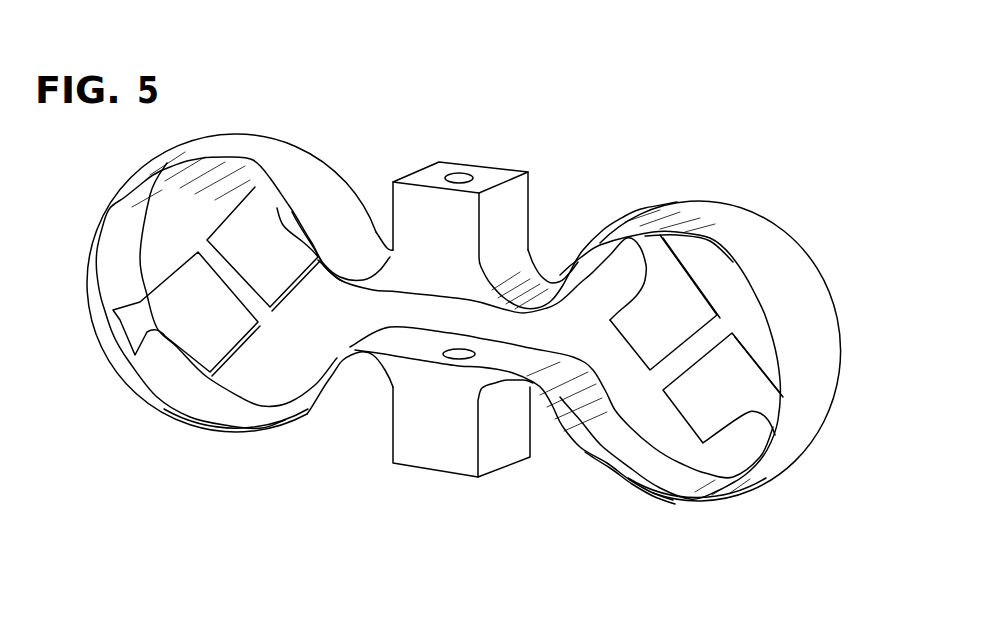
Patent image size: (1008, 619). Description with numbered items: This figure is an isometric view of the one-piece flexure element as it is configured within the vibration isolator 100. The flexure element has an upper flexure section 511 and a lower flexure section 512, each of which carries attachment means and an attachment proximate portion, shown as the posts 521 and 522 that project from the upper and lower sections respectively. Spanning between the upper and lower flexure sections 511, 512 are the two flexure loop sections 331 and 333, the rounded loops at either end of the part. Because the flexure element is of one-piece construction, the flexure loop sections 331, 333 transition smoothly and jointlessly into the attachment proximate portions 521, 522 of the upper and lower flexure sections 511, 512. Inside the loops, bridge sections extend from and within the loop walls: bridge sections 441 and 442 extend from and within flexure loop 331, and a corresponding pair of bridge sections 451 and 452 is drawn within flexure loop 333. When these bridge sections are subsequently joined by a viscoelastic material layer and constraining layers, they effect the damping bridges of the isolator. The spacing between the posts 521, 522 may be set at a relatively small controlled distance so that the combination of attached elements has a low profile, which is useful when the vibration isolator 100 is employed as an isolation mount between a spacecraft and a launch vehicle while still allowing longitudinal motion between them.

The vibration isolator 100 is at (805, 105).
The upper flexure section 511 is at (765, 155).
The lower flexure section 512 is at (145, 485).
The attachment proximate portion 521 is at (530, 163).
The attachment proximate portion 522 is at (535, 483).
The flexure loop section 331 is at (732, 193).
The flexure loop section 333 is at (257, 437).
The bridge section 441 is at (643, 327).
The bridge section 442 is at (692, 402).
The first elastic tab of left ring 451 is at (240, 264).
The second elastic tab of left ring 452 is at (182, 324).